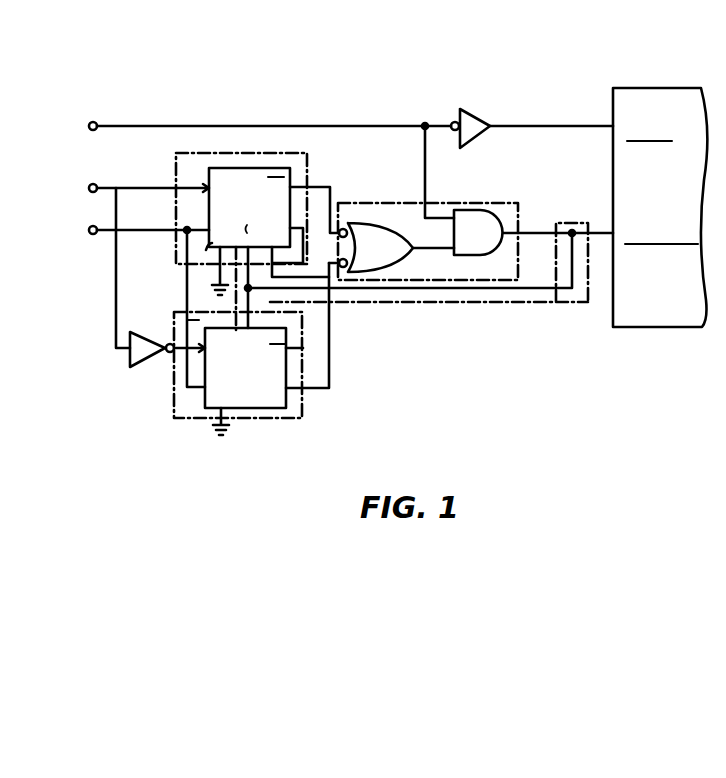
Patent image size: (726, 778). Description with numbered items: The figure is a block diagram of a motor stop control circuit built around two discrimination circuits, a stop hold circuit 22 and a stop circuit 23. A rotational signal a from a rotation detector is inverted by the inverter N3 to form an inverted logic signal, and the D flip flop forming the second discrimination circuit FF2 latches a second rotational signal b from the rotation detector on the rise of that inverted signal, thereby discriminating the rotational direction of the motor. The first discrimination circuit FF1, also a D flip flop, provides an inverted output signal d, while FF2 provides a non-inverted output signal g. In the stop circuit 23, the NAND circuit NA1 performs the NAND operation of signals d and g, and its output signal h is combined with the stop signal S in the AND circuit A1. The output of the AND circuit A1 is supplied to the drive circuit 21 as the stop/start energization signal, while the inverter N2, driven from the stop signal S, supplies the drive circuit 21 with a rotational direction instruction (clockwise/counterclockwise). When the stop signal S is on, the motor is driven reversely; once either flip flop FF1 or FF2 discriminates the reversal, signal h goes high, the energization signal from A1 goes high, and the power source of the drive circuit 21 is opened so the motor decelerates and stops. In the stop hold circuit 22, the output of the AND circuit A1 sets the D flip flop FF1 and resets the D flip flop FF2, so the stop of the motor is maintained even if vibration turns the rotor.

The drive circuit 21 is at (665, 327).
The stop hold circuit 22 is at (543, 302).
The stop circuit 23 is at (463, 203).
The inverter N2 is at (487, 108).
The inverter N3 is at (152, 328).
The NAND circuit NA1 is at (375, 233).
The AND circuit A1 is at (490, 249).
The first discrimination circuit FF1 is at (253, 153).
The second discrimination circuit FF2 is at (303, 416).
The stop signal S is at (260, 163).
The rotational signal a is at (137, 259).
The rotational signal b is at (137, 300).
The inverted output signal d is at (318, 187).
The non-inverted output signal g is at (329, 365).
The output signal h is at (408, 248).